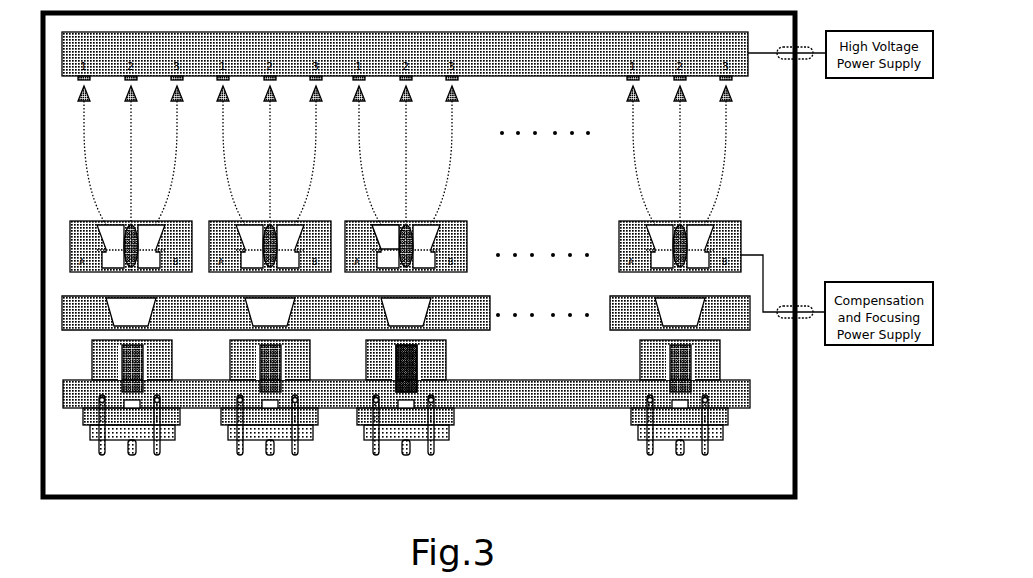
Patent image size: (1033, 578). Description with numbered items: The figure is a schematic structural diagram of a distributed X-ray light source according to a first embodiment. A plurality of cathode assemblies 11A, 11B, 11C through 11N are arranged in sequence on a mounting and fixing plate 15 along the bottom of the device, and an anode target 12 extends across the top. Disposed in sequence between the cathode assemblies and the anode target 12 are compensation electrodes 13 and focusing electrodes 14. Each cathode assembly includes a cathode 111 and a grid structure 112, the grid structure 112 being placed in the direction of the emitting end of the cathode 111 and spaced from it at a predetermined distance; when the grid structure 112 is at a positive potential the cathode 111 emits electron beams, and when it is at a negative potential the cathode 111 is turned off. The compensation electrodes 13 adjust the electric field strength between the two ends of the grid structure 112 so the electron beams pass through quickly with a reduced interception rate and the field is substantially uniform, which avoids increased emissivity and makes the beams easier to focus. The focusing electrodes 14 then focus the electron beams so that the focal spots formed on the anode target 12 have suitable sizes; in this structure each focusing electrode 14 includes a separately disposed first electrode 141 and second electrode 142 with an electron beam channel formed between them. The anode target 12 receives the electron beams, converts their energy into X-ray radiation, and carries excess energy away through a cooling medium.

The cathode assembly 11A is at (131, 415).
The cathode assembly 11B is at (269, 415).
The cathode assembly 11C is at (413, 415).
The cathode assembly 11N is at (679, 415).
The cathode 111 is at (420, 358).
The grid structure 112 is at (377, 346).
The anode target 12 is at (545, 75).
The compensation electrode 13 is at (482, 331).
The focusing electrode 14 is at (447, 219).
The first electrode 141 is at (357, 222).
The second electrode 142 is at (445, 222).
The mounting and fixing plate 15 is at (553, 409).